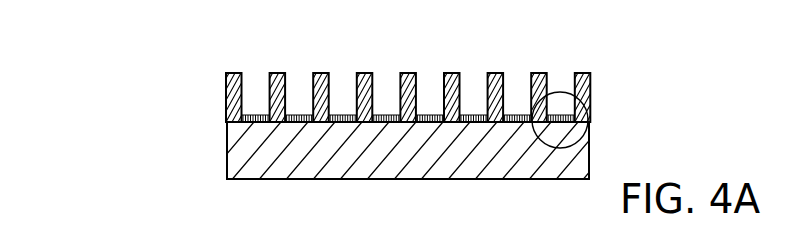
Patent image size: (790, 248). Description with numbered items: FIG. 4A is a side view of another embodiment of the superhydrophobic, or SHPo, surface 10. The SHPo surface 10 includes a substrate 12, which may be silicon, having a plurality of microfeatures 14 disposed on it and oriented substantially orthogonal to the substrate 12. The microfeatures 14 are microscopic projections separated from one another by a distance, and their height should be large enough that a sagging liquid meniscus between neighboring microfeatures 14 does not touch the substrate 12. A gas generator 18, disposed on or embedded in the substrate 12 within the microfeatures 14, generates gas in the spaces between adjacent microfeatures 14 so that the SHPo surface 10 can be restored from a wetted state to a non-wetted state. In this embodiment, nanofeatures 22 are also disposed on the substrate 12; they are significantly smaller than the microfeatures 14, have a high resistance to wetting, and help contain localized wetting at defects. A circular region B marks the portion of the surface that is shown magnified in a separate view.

The superhydrophobic (SHPo) surface 10 is at (128, 146).
The substrate 12 is at (226, 121).
The microfeatures 14 is at (590, 80).
The gas generator 18 is at (406, 174).
The nanofeatures 22 is at (451, 198).
The circular region B is at (589, 128).